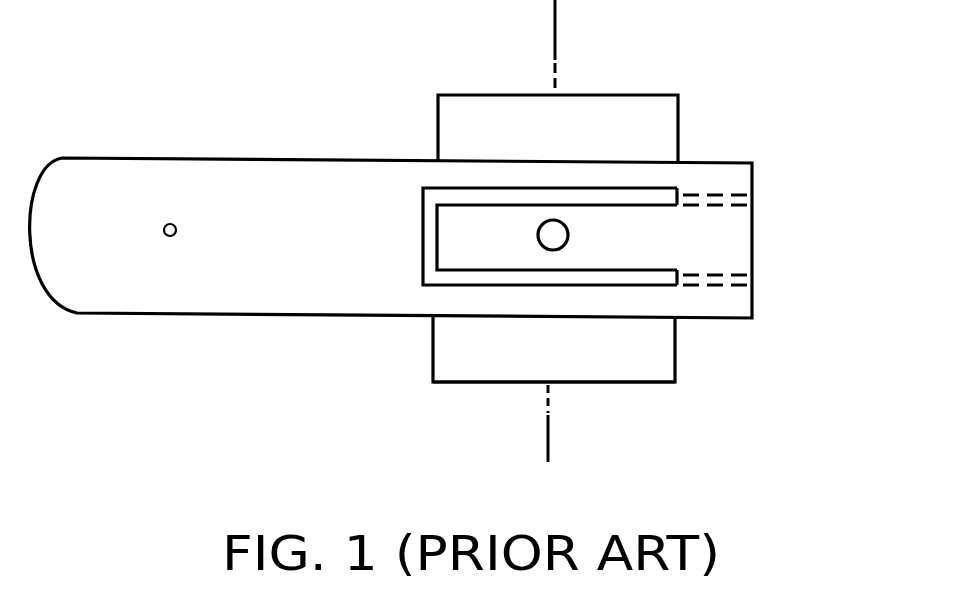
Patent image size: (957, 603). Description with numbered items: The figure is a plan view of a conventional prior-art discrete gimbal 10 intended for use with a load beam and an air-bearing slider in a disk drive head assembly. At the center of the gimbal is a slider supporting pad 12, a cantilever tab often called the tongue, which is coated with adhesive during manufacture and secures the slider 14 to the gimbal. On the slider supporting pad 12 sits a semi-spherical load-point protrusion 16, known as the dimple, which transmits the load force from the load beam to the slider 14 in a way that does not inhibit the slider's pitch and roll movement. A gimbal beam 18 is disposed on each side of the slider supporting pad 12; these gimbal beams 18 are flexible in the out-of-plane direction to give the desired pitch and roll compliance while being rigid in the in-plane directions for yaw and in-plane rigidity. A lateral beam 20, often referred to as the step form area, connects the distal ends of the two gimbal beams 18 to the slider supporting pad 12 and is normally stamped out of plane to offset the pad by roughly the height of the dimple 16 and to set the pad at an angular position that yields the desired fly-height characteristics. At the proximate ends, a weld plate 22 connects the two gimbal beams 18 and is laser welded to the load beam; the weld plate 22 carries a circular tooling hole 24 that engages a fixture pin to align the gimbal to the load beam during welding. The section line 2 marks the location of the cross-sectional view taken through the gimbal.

The section line 2 is at (540, 5).
The discrete gimbal 10 is at (248, 324).
The slider supporting pad 12 is at (597, 237).
The slider 14 is at (653, 350).
The load-point protrusion 16 is at (538, 236).
The gimbal beam 18 is at (480, 180).
The lateral beam 20 is at (722, 242).
The weld plate 22 is at (130, 197).
The tooling hole 24 is at (175, 223).